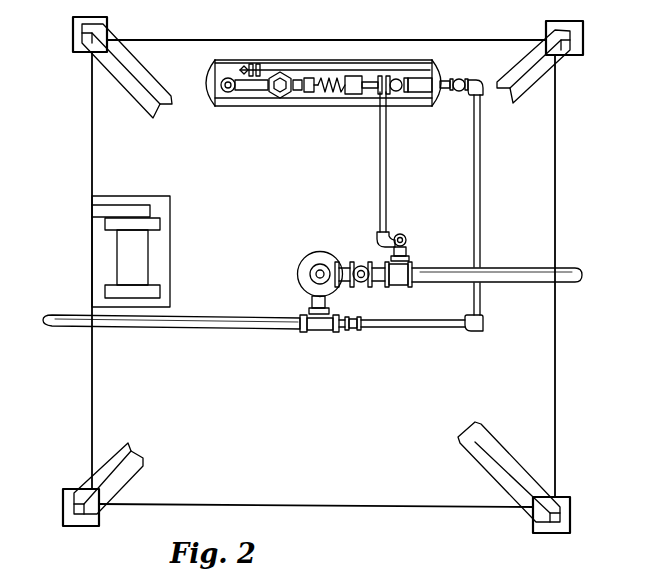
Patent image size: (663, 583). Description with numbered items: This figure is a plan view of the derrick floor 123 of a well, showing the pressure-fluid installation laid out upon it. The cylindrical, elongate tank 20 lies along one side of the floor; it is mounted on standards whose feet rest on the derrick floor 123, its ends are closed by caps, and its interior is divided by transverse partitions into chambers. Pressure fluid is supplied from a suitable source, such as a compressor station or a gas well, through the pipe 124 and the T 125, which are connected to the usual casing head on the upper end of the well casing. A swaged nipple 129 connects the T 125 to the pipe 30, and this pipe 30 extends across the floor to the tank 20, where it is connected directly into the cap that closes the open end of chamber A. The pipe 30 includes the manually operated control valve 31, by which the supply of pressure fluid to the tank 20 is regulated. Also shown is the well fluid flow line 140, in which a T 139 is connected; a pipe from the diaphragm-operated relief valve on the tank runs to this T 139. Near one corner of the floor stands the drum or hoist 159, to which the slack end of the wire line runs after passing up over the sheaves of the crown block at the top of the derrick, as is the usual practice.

The tank 20 is at (332, 62).
The control valve 31 is at (459, 79).
The pipe 30 is at (478, 196).
The derrick floor 123 is at (106, 397).
The pipe 124 is at (197, 320).
The T 125 is at (316, 333).
The swaged nipple 129 is at (374, 305).
The T 139 is at (402, 286).
The well fluid flow line 140 is at (512, 283).
The drum or hoist 159 is at (130, 254).